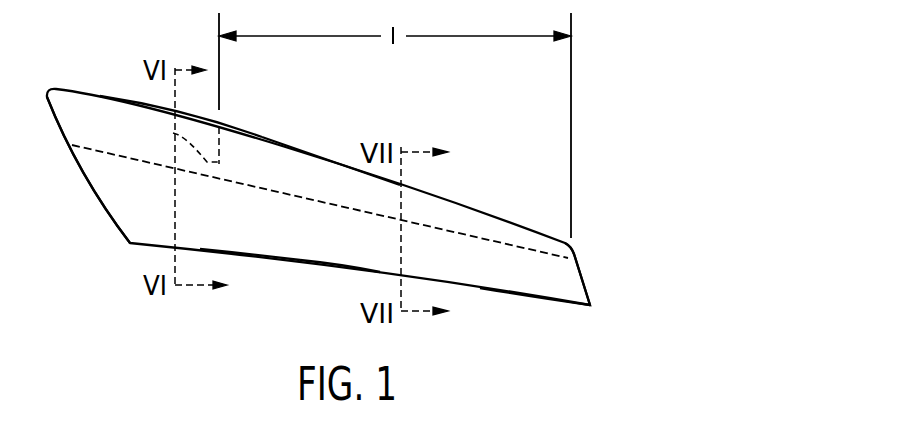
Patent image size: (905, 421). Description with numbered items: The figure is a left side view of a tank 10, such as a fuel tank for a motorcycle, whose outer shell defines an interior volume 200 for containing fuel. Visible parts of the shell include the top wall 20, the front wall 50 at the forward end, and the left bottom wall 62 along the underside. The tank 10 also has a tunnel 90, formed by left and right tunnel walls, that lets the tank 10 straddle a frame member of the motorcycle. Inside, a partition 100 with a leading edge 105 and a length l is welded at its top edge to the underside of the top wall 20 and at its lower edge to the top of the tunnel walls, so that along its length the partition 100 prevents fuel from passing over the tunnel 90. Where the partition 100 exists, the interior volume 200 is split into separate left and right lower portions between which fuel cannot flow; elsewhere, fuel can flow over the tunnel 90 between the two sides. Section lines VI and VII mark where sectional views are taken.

The tank 10 is at (89, 261).
The top wall 20 is at (258, 135).
The front wall 50 is at (90, 187).
The left bottom wall 62 is at (338, 268).
The tunnel 90 is at (495, 276).
The partition 100 is at (303, 158).
The leading edge 105 is at (175, 133).
The interior volume 200 is at (287, 250).